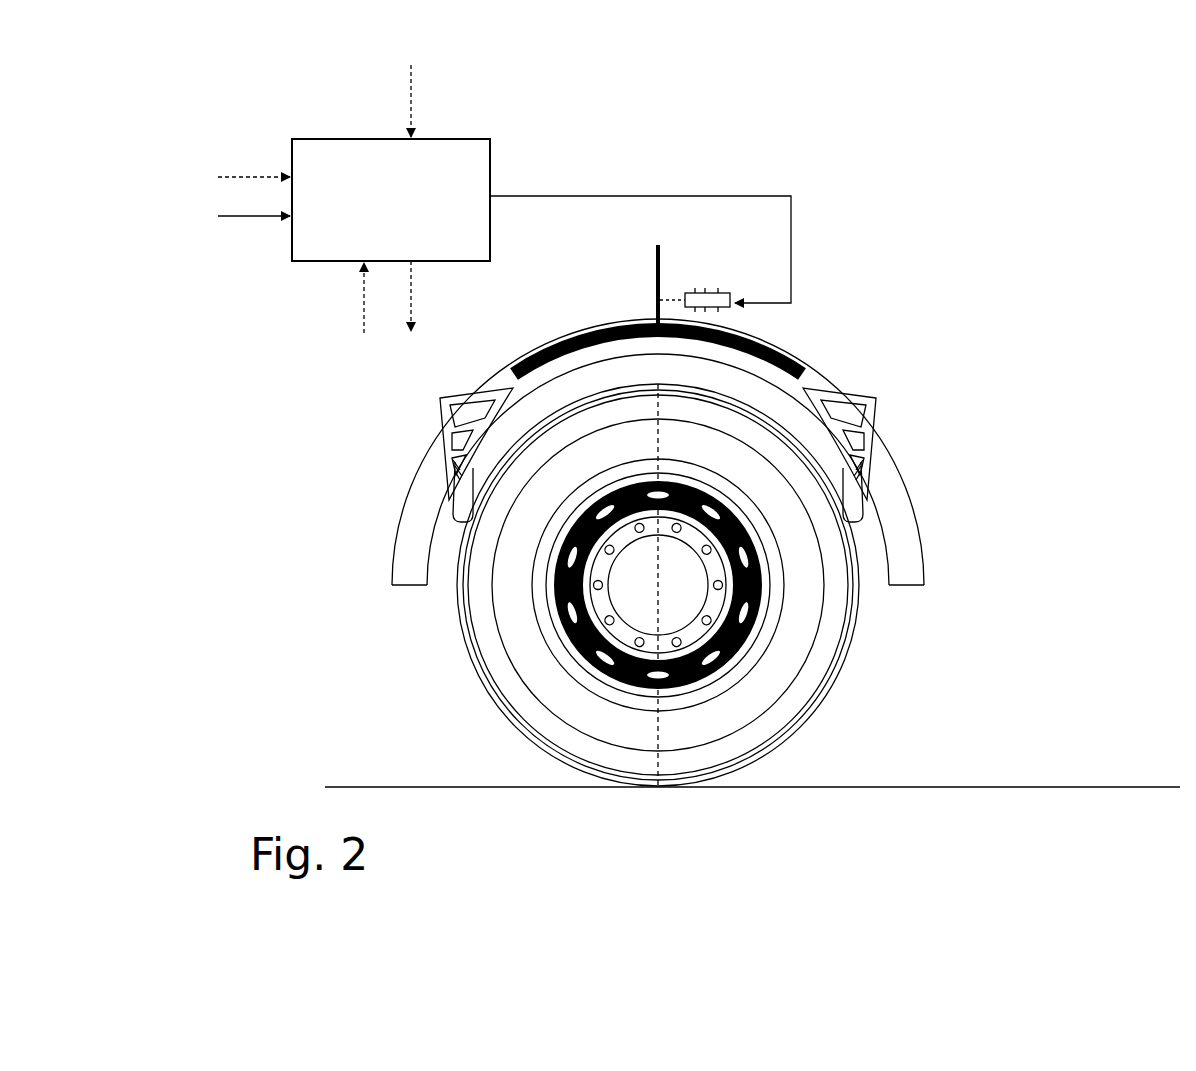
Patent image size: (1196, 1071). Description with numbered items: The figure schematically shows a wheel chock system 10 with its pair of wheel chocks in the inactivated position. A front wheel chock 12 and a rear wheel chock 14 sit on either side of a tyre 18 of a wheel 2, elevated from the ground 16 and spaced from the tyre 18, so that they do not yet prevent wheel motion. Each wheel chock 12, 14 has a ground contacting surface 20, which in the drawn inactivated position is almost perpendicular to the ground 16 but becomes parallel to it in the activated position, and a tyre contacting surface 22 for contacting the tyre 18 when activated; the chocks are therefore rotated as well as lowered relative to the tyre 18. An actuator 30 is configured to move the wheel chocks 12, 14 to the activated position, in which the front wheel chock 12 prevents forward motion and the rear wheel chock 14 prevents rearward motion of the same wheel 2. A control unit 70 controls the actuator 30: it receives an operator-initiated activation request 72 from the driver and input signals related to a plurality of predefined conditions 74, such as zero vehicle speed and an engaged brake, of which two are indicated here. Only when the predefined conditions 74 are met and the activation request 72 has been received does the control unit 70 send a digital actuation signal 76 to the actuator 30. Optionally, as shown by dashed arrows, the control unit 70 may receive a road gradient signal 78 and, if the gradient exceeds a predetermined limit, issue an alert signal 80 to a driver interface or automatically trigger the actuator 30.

The wheel 2 is at (760, 585).
The wheel chock system 10 is at (928, 130).
The front wheel chock 12 is at (437, 400).
The rear wheel chock 14 is at (876, 400).
The ground 16 is at (1122, 787).
The tyre 18 is at (845, 652).
The ground contacting surface 20 is at (443, 463).
The tyre contacting surface 22 is at (470, 500).
The actuator 30 is at (702, 260).
The control unit 70 is at (391, 200).
The operator-initiated activation request 72 is at (363, 300).
The predefined conditions 74 is at (242, 177).
The digital actuation signal 76 is at (578, 196).
The road gradient signal 78 is at (412, 100).
The alert signal 80 is at (412, 290).